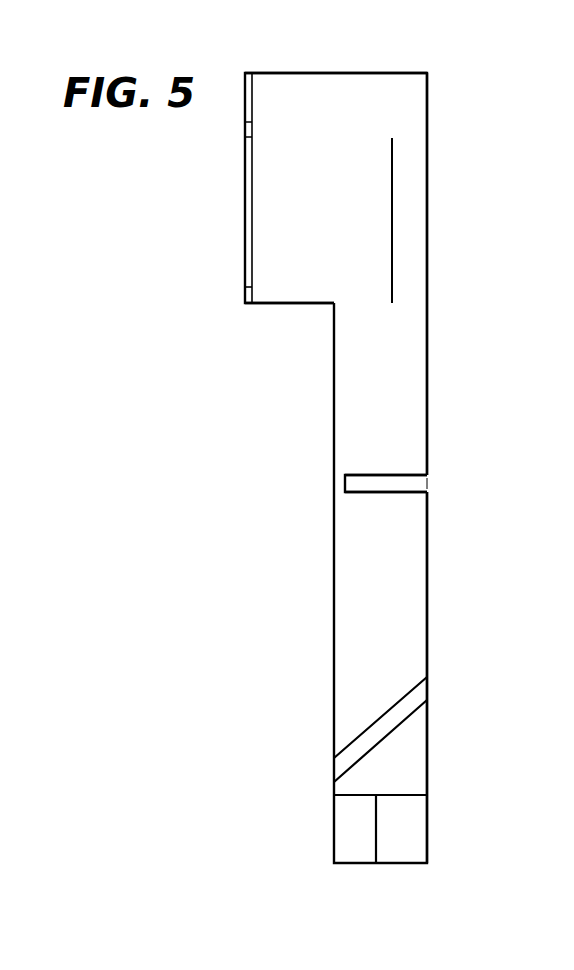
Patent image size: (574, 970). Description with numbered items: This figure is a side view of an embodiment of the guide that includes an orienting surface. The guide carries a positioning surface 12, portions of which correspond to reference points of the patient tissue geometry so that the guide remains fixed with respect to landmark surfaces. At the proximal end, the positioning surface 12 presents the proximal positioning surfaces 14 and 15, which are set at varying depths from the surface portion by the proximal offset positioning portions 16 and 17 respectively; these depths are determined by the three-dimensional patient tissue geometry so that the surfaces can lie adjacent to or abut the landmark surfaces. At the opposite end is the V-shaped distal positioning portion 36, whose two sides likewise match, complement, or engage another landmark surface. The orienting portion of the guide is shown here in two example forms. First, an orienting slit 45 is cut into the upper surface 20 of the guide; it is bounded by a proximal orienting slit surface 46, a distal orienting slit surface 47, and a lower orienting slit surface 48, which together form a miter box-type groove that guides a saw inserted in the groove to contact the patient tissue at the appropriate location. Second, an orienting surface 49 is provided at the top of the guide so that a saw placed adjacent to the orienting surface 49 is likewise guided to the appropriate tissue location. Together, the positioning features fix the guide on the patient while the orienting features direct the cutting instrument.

The positioning surface 12 is at (288, 567).
The proximal positioning surface 14 is at (245, 242).
The proximal positioning surface 15 is at (245, 175).
The proximal offset positioning portion 16 is at (268, 304).
The proximal offset positioning portion 17 is at (245, 304).
The upper surface 20 is at (427, 258).
The distal positioning portion 36 is at (350, 864).
The orienting slit 45 is at (428, 482).
The proximal orienting slit surface 46 is at (387, 475).
The distal orienting slit surface 47 is at (397, 492).
The lower orienting slit surface 48 is at (345, 487).
The orienting surface 49 is at (355, 73).